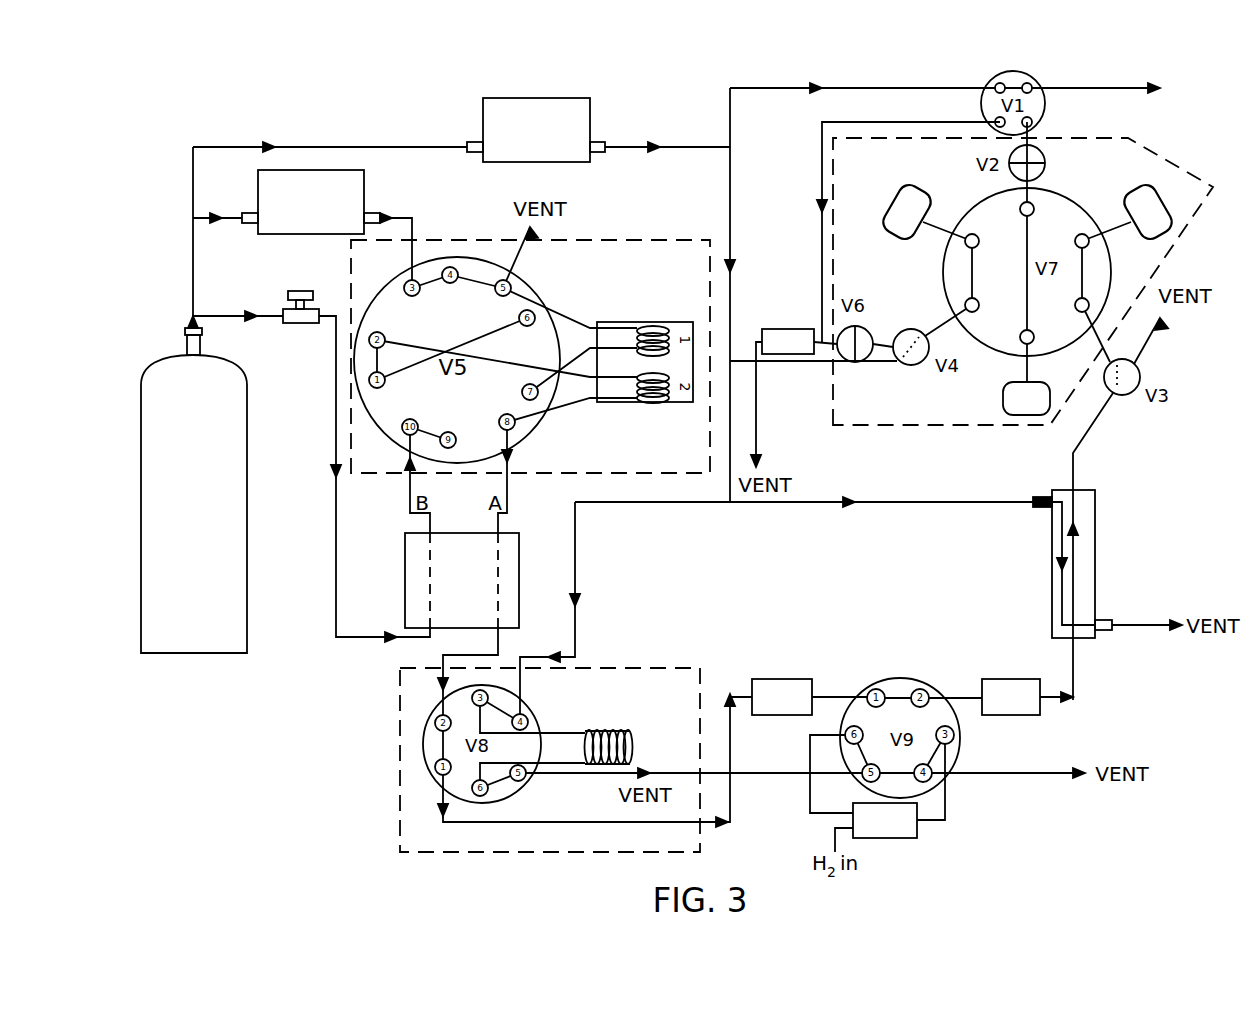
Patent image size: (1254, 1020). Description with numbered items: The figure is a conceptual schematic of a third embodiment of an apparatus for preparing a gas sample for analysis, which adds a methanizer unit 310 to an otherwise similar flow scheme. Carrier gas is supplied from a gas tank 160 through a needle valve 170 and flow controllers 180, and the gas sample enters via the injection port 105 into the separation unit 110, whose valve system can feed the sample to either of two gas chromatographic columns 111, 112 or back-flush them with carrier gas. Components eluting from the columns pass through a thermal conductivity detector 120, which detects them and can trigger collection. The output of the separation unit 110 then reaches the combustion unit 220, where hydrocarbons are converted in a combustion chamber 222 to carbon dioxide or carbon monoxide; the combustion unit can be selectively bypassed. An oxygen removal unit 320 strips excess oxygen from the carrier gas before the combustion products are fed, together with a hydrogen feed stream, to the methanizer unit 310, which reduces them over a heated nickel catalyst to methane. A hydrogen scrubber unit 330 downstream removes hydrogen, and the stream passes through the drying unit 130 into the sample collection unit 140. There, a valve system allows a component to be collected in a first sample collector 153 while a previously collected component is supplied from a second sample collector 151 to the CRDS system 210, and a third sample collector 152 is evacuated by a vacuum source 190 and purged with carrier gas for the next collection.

The injection port 105 is at (402, 217).
The separation unit 110 is at (650, 240).
The gas chromatographic column 111 is at (650, 328).
The gas chromatographic column 112 is at (650, 400).
The thermal conductivity detector 120 is at (446, 570).
The drying unit 130 is at (1095, 557).
The sample collection unit 140 is at (920, 427).
The second sample collector 151 is at (1003, 400).
The third sample collector 152 is at (895, 186).
The first sample collector 153 is at (1166, 238).
The gas tank 160 is at (174, 417).
The needle valve 170 is at (300, 291).
The flow controller 180 is at (294, 213).
The vacuum source 190 is at (790, 329).
The CRDS system 210 is at (1186, 76).
The combustion unit 220 is at (655, 668).
The combustion chamber 222 is at (607, 730).
The methanizer unit 310 is at (868, 831).
The oxygen removal unit 320 is at (788, 679).
The hydrogen scrubber unit 330 is at (990, 679).